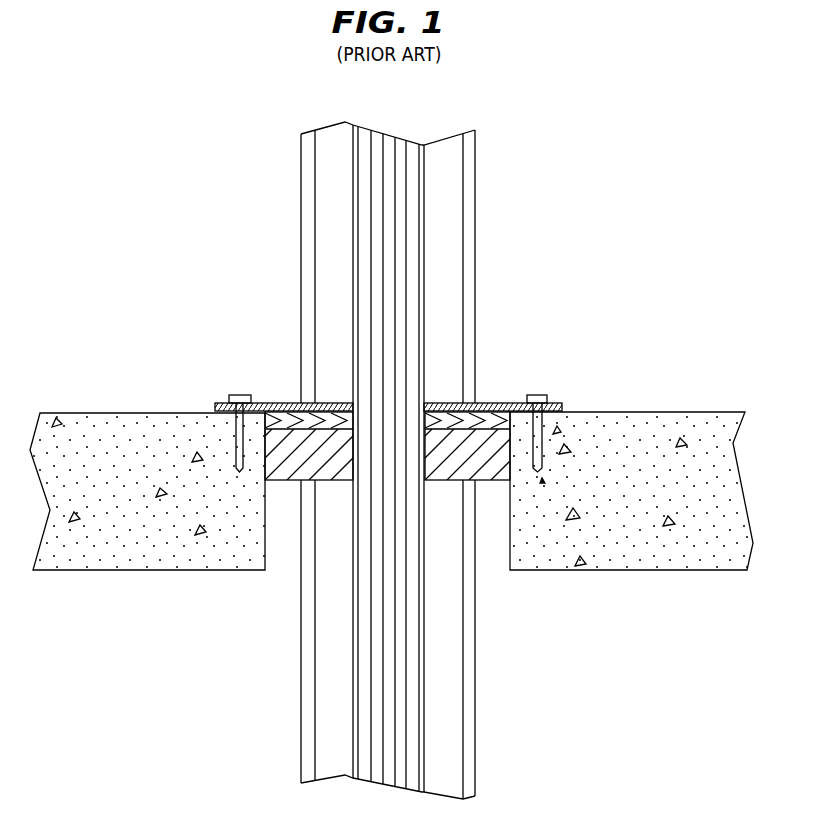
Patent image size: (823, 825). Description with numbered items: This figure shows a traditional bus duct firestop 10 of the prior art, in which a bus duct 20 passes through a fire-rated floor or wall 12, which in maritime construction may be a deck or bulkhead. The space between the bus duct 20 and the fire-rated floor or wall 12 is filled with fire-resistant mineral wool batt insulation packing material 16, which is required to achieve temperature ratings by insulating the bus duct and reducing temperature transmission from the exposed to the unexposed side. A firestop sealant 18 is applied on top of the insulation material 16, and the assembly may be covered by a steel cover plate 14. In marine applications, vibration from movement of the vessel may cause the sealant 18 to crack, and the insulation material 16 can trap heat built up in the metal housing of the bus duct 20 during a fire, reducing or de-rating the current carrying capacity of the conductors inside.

The prior art column base connection assembly 10 is at (572, 150).
The fire-rated floor or wall 12 is at (93, 572).
The steel cover plate 14 is at (282, 403).
The fire-resistant mineral wool batt insulation packing material 16 is at (335, 457).
The firestop sealant 18 is at (503, 403).
The bus duct 20 is at (358, 292).